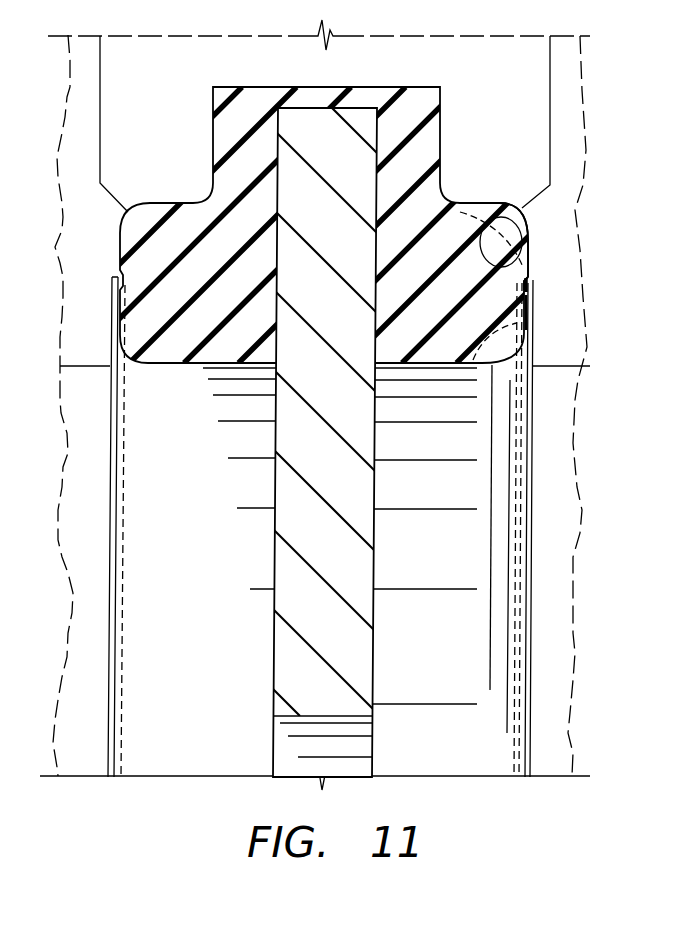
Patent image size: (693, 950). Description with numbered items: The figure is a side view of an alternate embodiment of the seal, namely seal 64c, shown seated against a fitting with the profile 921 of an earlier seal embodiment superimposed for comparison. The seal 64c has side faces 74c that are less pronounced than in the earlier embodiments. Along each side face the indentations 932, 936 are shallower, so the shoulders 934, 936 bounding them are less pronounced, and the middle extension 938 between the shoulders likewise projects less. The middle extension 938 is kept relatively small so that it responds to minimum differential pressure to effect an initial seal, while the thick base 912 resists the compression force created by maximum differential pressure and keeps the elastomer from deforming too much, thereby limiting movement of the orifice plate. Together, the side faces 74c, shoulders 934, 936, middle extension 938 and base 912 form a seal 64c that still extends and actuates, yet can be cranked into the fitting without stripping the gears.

The base 912 is at (452, 220).
The shoulder 936 is at (481, 218).
The side faces 74c is at (518, 206).
The shoulder 934 is at (530, 252).
The middle extension 938 is at (532, 281).
The indentation 932 is at (530, 288).
The profile 921 is at (512, 366).
The seal 64c is at (437, 350).